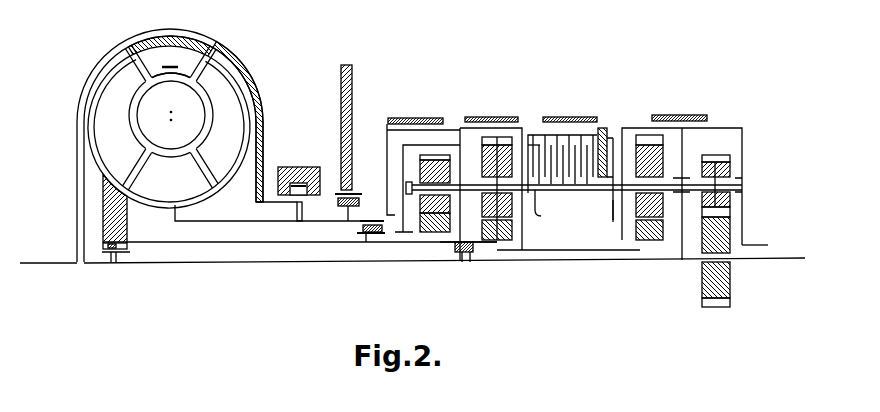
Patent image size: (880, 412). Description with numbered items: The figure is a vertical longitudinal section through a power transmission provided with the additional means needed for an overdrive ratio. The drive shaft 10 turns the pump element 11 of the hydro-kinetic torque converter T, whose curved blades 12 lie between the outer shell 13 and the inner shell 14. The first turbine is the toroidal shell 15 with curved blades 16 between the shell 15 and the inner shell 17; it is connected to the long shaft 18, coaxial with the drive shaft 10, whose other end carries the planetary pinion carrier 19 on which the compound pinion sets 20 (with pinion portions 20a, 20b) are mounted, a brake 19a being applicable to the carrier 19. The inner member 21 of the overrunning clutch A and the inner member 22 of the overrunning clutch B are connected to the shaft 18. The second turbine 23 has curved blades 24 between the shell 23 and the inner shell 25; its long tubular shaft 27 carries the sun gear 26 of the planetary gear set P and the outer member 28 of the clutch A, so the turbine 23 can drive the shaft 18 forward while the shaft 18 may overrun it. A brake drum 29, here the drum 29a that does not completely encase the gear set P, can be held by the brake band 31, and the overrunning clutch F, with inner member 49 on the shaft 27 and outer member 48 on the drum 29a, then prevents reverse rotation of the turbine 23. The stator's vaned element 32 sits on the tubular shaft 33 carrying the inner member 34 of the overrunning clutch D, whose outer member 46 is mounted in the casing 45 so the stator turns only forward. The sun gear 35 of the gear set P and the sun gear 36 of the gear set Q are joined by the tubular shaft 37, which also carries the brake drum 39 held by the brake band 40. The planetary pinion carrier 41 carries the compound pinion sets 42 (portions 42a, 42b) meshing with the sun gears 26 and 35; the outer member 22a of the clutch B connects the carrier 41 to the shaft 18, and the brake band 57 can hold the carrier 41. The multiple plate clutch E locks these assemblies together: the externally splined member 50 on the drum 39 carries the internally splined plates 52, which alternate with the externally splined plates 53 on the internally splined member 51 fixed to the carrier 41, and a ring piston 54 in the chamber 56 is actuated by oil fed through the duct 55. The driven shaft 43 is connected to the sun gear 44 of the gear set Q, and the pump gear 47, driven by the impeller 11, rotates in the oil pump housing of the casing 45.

The hydro-kinetic torque converter T is at (112, 45).
The drive shaft 10 is at (55, 263).
The pump element 11 is at (233, 47).
The curved blades 12 is at (211, 117).
The outer shell 13 is at (260, 100).
The inner shell 14 is at (207, 113).
The toroidal shell 15 is at (165, 37).
The curved blades 16 is at (171, 63).
The inner shell 17 is at (168, 70).
The long shaft 18 is at (222, 264).
The planetary pinion carrier 19 is at (683, 140).
The brake 19a is at (695, 113).
The compound planetary pinion sets 20 is at (728, 197).
The gear cap 20a is at (655, 140).
The output gear 20b is at (730, 158).
The inner member of overrunning clutch A 21 is at (110, 256).
The inner member of overrunning clutch B 22 is at (472, 250).
The outer member of overrunning clutch B 22a is at (440, 242).
The second turbine 23 is at (97, 97).
The curved blades 24 is at (128, 117).
The inner shell 25 is at (134, 113).
The sun gear 26 is at (428, 237).
The long tubular shaft 27 is at (260, 243).
The outer member of overrunning clutch A 28 is at (128, 233).
The housing or brake drum 29 is at (388, 121).
The brake drum 29a is at (385, 157).
The brake band 31 is at (430, 117).
The vaned element 32 is at (169, 131).
The tubular shaft 33 is at (218, 221).
The inner member of overrunning clutch D 34 is at (340, 208).
The sun gear 35 is at (512, 236).
The sun gear 36 is at (660, 242).
The tubular shaft 37 is at (565, 252).
The brake drum 39 is at (607, 170).
The brake band 40 is at (577, 117).
The planetary pinion carrier 41 is at (460, 137).
The compound planetary pinion sets 42 is at (418, 185).
The first gear 42a is at (427, 157).
The second gear 42b is at (497, 140).
The driven shaft 43 is at (775, 257).
The sun gear 44 is at (732, 292).
The casing 45 is at (341, 75).
The outer member of overrunning clutch D 46 is at (335, 190).
The pump gear 47 is at (300, 212).
The outer member of clutch F 48 is at (383, 224).
The inner member of clutch F 49 is at (362, 238).
The externally splined member 50 is at (548, 184).
The internally splined member 51 is at (603, 132).
The internally splined friction clutch plates 52 is at (541, 216).
The externally splined friction clutch plates 53 is at (535, 143).
The ring piston 54 is at (640, 133).
The duct 55 is at (613, 213).
The chamber 56 is at (607, 192).
The brake band 57 is at (482, 117).
The overrunning clutch A is at (128, 250).
The overrunning clutch B is at (465, 254).
The overrunning clutch D is at (355, 223).
The multiple plate clutch E is at (557, 135).
The overrunning clutch F is at (360, 234).
The first planetary gear set P is at (458, 133).
The planetary gear set Q is at (732, 127).